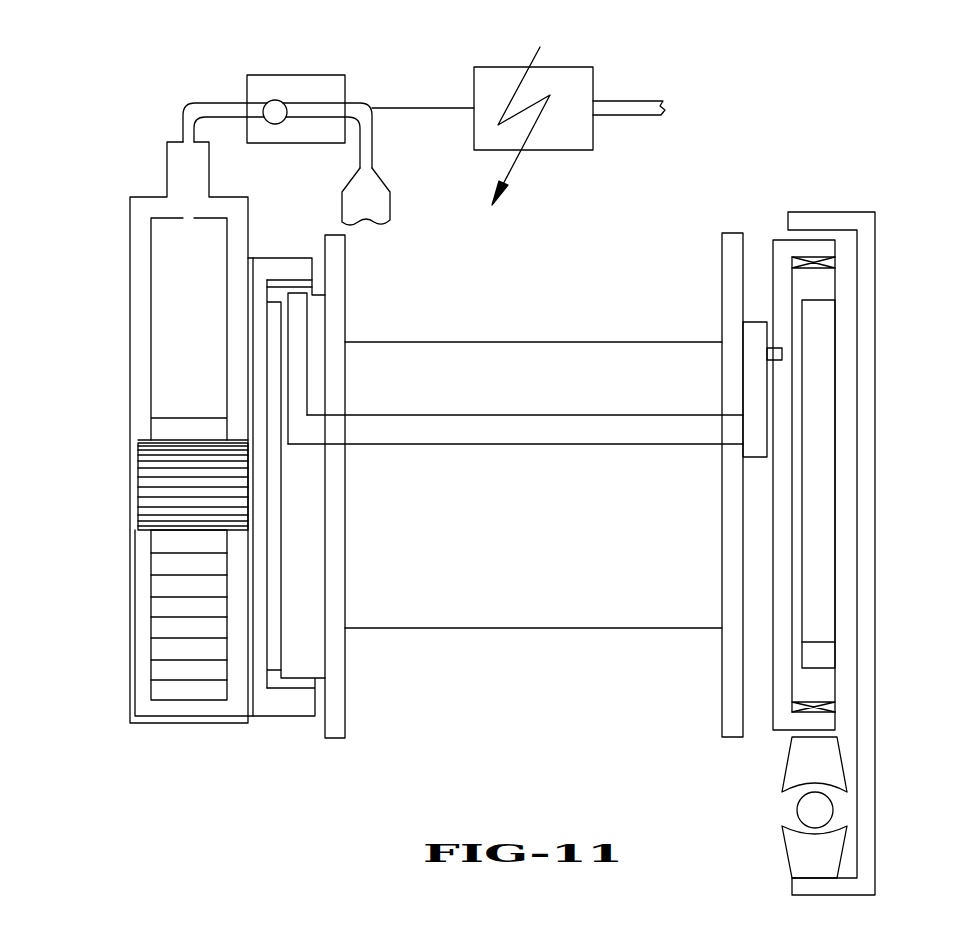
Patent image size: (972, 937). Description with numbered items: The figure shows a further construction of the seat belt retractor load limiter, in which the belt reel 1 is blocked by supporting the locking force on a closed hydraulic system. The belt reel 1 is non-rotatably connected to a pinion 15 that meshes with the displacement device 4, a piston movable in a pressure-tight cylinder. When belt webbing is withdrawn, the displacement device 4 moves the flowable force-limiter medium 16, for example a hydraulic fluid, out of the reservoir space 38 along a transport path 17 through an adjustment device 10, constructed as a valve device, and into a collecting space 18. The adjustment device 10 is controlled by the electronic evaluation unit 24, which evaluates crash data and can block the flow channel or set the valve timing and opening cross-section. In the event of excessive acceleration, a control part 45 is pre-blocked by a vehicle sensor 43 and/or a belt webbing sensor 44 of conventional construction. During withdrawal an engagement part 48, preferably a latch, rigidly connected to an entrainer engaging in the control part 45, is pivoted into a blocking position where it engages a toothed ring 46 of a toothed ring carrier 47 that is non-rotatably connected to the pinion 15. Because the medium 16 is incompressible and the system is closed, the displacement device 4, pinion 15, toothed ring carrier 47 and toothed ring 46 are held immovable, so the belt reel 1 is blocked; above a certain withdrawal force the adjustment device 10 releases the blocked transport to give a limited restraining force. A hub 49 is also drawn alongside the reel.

The belt reel 1 is at (480, 617).
The displacement device 4 is at (182, 605).
The adjustment device 10 is at (275, 137).
The pinion 15 is at (165, 498).
The force-limiter medium 16 is at (204, 324).
The transport path 17 is at (200, 112).
The collecting space 18 is at (380, 208).
The electronic evaluation unit 24 is at (557, 130).
The reservoir space 38 is at (170, 262).
The vehicle sensor 43 is at (797, 810).
The belt webbing sensor 44 is at (818, 585).
The control part 45 is at (778, 325).
The toothed ring 46 is at (293, 682).
The toothed ring carrier 47 is at (260, 395).
The engagement part 48 is at (298, 332).
The hub 49 is at (755, 407).